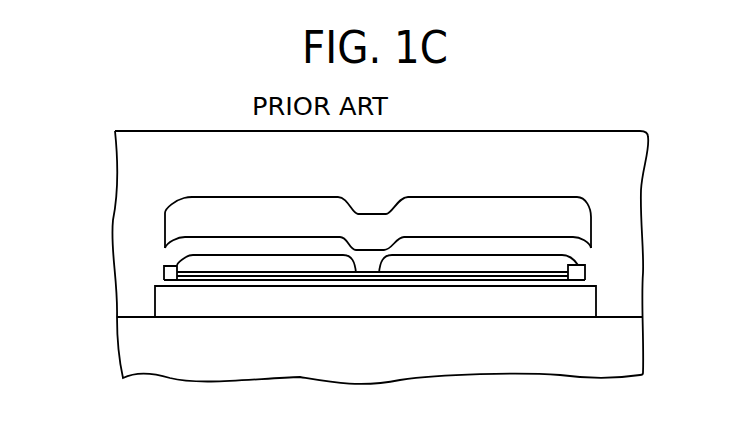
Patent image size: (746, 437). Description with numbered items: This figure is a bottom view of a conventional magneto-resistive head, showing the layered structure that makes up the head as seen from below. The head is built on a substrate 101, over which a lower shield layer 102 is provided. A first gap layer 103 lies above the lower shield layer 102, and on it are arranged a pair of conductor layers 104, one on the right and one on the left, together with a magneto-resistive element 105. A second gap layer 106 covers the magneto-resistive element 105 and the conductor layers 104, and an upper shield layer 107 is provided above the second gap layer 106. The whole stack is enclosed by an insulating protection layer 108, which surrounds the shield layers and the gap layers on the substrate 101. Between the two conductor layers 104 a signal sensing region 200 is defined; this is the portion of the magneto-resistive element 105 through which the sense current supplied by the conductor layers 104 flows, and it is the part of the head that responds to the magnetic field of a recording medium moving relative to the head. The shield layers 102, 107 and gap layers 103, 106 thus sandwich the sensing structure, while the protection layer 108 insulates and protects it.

The substrate 101 is at (582, 360).
The lower shield layer 102 is at (577, 302).
The first gap layer 103 is at (157, 283).
The conductor layers 104 is at (586, 264).
The magneto-resistive element 105 is at (588, 272).
The second gap layer 106 is at (172, 257).
The upper shield layer 107 is at (575, 215).
The insulating protection layer 108 is at (593, 145).
The signal sensing region 200 is at (371, 281).